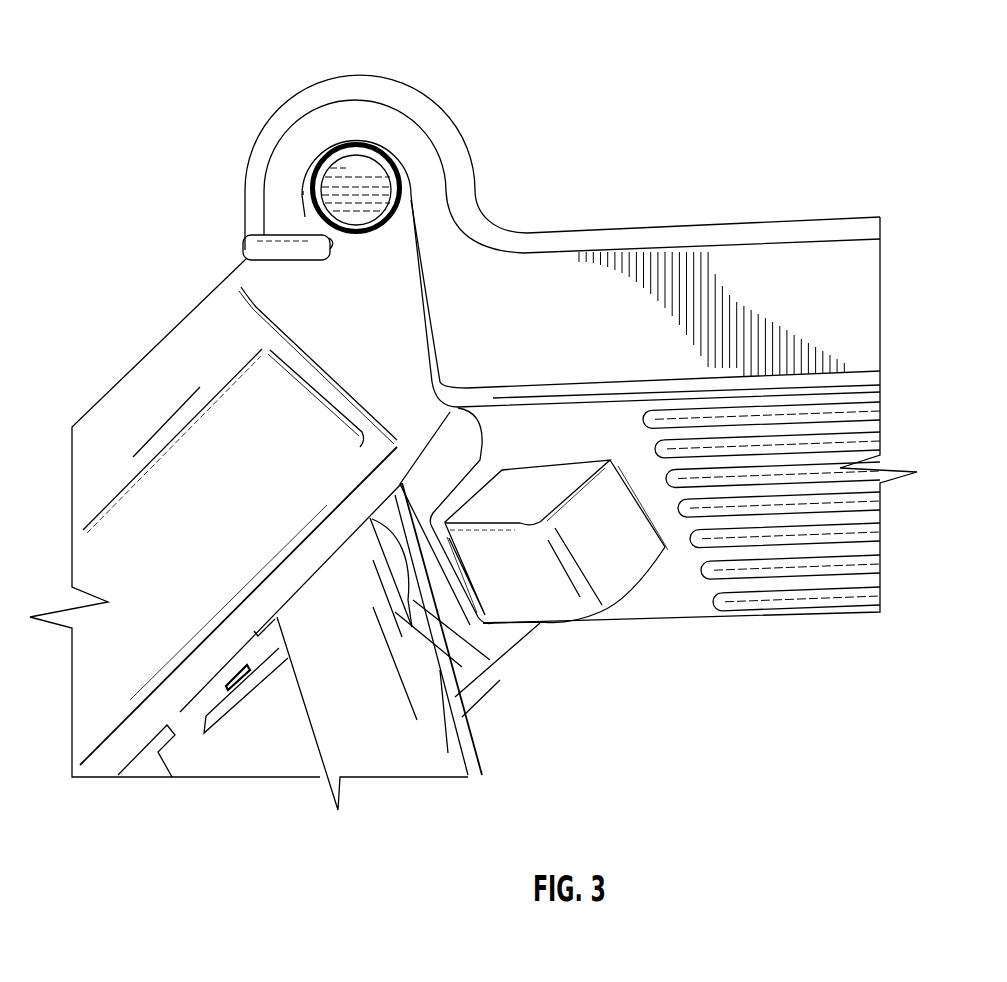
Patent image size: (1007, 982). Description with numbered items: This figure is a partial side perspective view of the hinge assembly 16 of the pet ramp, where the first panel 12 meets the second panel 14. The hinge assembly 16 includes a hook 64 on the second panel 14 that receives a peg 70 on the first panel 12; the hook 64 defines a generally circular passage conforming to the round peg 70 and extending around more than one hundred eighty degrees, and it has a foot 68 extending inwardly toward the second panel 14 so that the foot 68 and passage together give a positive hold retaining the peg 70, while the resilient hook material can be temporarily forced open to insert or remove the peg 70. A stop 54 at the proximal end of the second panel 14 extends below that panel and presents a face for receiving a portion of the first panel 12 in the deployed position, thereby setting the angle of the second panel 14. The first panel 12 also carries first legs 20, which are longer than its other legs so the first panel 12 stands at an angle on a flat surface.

The first panel 12 is at (110, 378).
The second panel 14 is at (800, 213).
The hinge assembly 16 is at (552, 320).
The first legs 20 is at (480, 757).
The stop 54 is at (613, 612).
The hook 64 is at (421, 86).
The foot 68 is at (330, 248).
The peg 70 is at (360, 240).